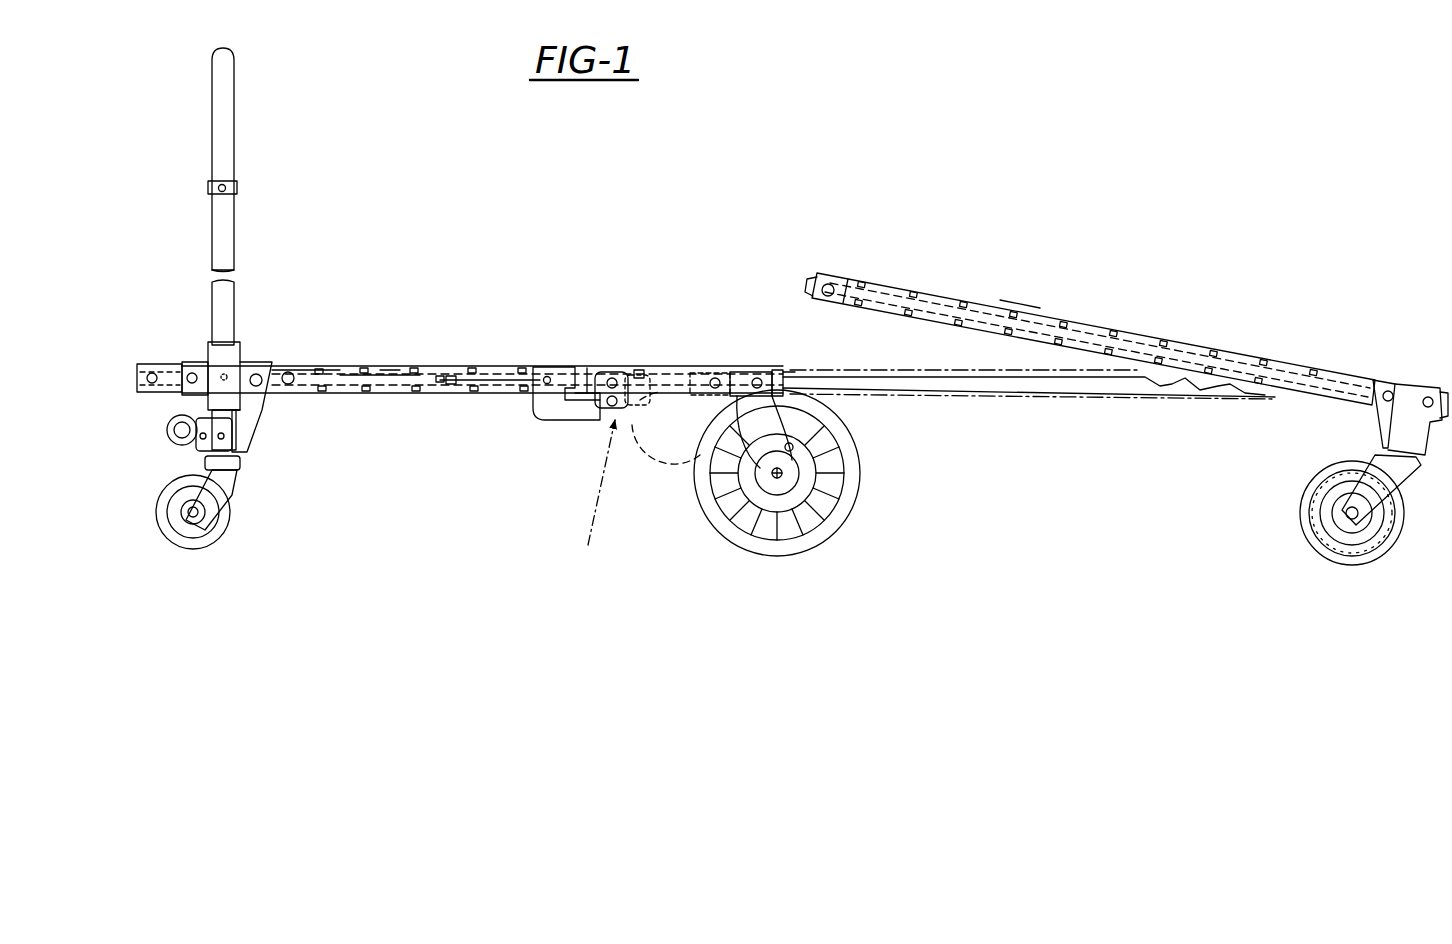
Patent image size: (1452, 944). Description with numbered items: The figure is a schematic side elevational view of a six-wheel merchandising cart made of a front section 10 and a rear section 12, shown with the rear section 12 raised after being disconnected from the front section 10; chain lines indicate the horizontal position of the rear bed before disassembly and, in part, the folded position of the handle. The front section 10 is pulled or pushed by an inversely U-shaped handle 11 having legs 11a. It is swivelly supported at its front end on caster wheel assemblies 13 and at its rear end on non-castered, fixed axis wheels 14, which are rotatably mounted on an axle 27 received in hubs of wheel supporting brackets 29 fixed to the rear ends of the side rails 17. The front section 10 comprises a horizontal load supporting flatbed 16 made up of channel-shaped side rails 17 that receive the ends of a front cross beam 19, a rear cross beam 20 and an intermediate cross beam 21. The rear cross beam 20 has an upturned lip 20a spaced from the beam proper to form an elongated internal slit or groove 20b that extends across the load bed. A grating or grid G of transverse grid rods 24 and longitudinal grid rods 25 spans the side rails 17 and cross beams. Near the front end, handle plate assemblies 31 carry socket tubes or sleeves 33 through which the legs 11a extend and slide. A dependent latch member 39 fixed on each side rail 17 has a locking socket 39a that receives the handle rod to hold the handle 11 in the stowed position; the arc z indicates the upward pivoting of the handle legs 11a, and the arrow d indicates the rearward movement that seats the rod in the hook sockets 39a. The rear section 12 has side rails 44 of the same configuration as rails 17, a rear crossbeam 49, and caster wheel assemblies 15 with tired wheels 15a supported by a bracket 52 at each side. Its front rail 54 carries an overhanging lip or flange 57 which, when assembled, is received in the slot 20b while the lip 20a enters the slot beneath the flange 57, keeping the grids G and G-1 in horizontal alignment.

The front section of the cart 10 is at (374, 263).
The handle 11 is at (240, 136).
The legs 11a is at (233, 327).
The rear section of the cart 12 is at (912, 283).
The caster wheel assemblies 13 is at (232, 506).
The fixed axis rotatable wheels 14 is at (868, 500).
The caster wheel assemblies 15 is at (1298, 520).
The tired wheels 15a is at (1368, 555).
The horizontal platform or load supporting flatbed 16 is at (477, 364).
The side rails 17 is at (513, 366).
The front cross beam 19 is at (168, 360).
The rear cross beam 20 is at (746, 365).
The upturned lip 20a is at (790, 376).
The internal slit or groove 20b is at (773, 366).
The intermediate cross beam 21 is at (306, 364).
The transverse grid rods 24 is at (394, 368).
The longitudinal grid rods 25 is at (355, 365).
The axle 27 is at (790, 472).
The wheel supporting brackets 29 is at (795, 432).
The handle plate assembly 31 is at (262, 426).
The socket tubes or sleeves 33 is at (236, 358).
The latch member 39 is at (548, 402).
The locking socket 39a is at (612, 416).
The side rails 44 is at (1170, 322).
The crossbeam 49 is at (1415, 380).
The bracket 52 is at (1366, 382).
The front rail 54 is at (845, 283).
The overhanging lip or flange 57 is at (810, 282).
The grating or grid G is at (453, 364).
The grid G-1 is at (1028, 305).
The arrow d is at (586, 362).
The arc z is at (590, 512).